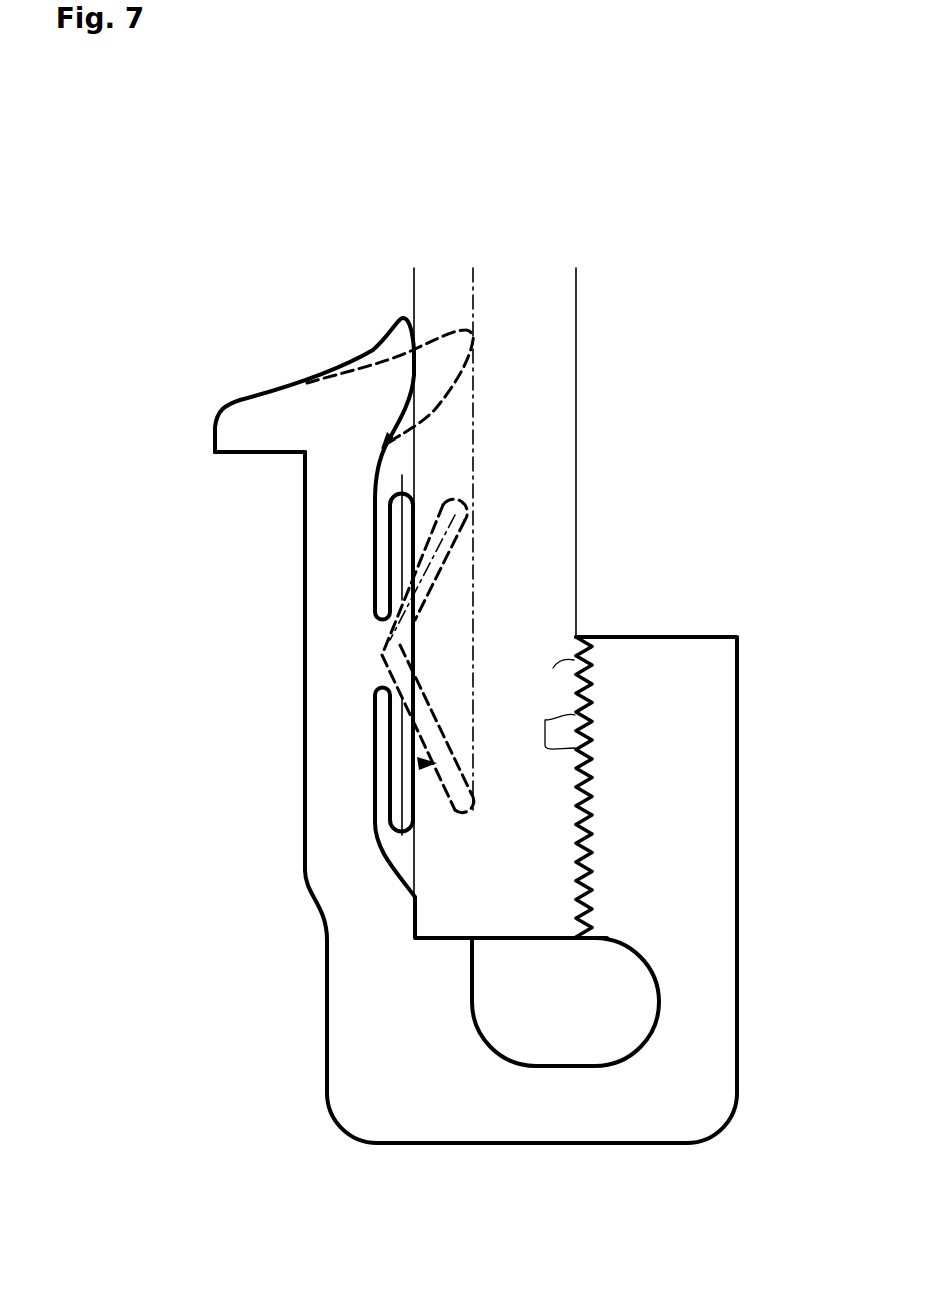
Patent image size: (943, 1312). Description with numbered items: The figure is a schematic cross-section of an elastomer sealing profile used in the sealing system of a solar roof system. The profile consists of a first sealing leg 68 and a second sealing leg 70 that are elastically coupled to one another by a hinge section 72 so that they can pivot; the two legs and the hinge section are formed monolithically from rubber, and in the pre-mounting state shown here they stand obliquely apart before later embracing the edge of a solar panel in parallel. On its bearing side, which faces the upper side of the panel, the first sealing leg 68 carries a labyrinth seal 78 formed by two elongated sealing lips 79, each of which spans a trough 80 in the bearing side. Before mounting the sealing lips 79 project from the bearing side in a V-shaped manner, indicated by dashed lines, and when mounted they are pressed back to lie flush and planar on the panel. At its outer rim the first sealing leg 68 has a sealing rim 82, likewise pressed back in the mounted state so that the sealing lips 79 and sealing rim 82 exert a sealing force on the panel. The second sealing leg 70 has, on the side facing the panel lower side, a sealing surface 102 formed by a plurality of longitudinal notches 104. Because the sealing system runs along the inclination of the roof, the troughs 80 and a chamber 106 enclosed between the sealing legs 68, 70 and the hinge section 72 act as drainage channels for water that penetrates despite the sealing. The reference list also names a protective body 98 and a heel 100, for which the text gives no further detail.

The first sealing leg 68 is at (322, 707).
The second sealing leg 70 is at (722, 663).
The hinge section 72 is at (533, 1125).
The labyrinth seal 78 is at (458, 622).
The sealing lip 79 is at (422, 510).
The trough 80 is at (380, 560).
The sealing rim 82 is at (442, 311).
The protective body 98 is at (317, 392).
The heel 100 is at (202, 413).
The sealing surface 102 is at (610, 712).
The notch 104 is at (547, 704).
The chamber 106 is at (528, 1045).